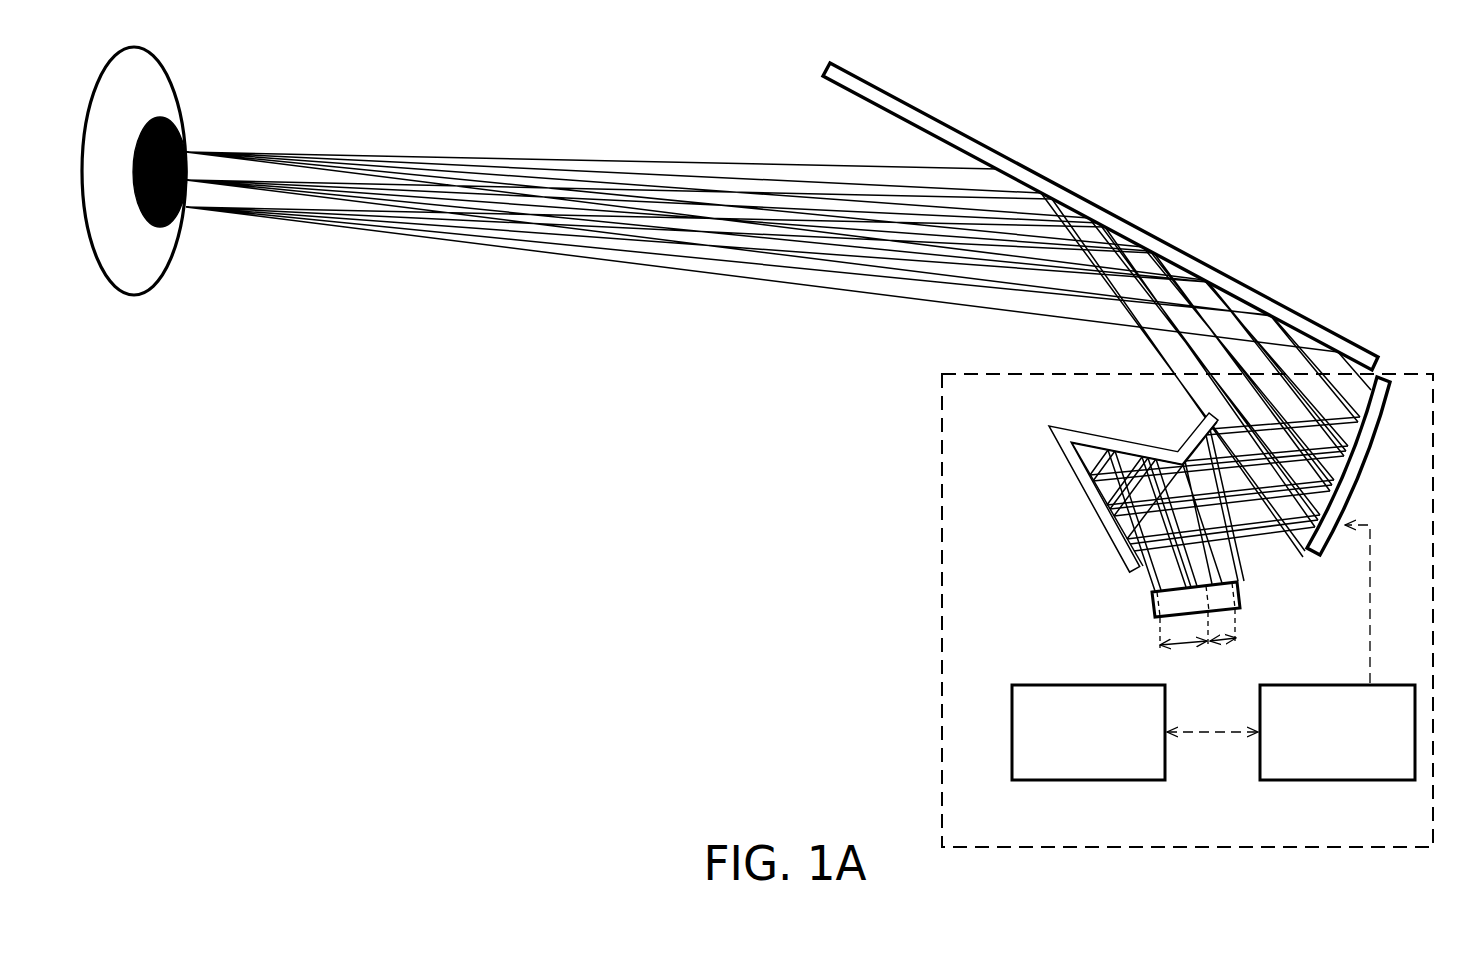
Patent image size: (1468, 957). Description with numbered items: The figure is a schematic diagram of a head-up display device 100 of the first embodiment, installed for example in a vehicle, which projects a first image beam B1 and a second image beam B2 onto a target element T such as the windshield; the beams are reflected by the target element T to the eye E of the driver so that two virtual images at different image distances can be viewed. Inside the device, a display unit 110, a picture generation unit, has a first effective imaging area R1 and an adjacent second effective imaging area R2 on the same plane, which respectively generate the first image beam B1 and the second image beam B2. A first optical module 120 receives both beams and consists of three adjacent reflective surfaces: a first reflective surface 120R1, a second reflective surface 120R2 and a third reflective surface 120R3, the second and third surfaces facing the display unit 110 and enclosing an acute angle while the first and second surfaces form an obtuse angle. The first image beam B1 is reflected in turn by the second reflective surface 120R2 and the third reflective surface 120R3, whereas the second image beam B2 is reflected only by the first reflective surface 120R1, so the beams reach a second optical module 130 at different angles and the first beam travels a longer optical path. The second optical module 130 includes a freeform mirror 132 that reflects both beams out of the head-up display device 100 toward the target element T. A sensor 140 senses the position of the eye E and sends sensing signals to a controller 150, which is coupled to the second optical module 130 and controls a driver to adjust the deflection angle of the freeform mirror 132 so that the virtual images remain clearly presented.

The eye E is at (160, 78).
The target element T is at (972, 138).
The head-up display device 100 is at (938, 549).
The display unit 110 is at (1150, 603).
The first optical module 120 is at (1072, 501).
The first reflective surface 120R1 is at (1204, 419).
The second reflective surface 120R2 is at (1097, 446).
The third reflective surface 120R3 is at (1100, 510).
The second optical module 130 is at (1380, 426).
The freeform mirror 132 is at (1392, 415).
The sensor 140 is at (1087, 782).
The controller 150 is at (1338, 782).
The first image beam B1 is at (1150, 580).
The second image beam B2 is at (1230, 560).
The first effective imaging area R1 is at (1184, 648).
The second effective imaging area R2 is at (1225, 646).